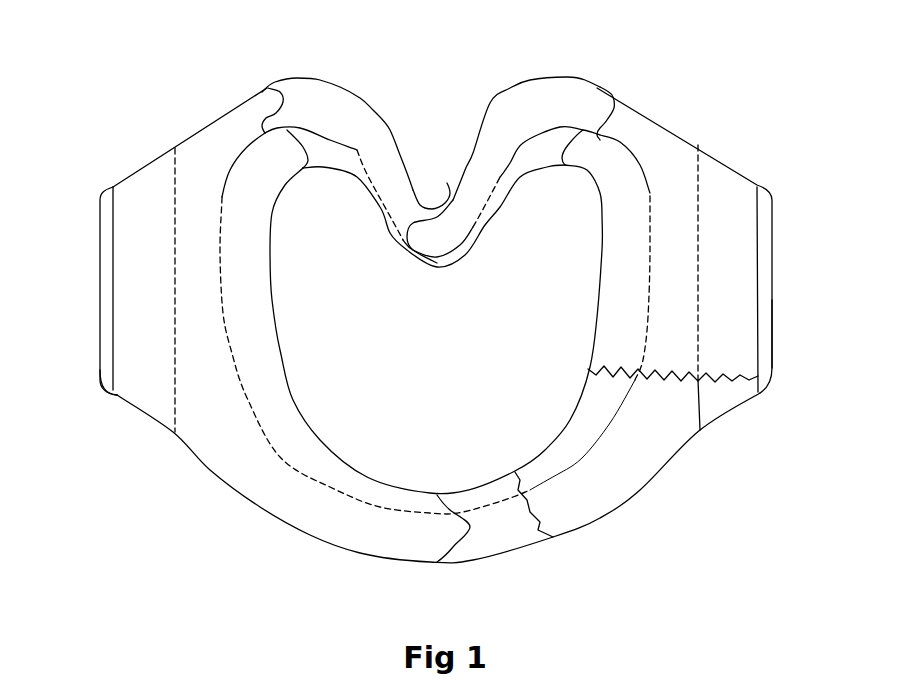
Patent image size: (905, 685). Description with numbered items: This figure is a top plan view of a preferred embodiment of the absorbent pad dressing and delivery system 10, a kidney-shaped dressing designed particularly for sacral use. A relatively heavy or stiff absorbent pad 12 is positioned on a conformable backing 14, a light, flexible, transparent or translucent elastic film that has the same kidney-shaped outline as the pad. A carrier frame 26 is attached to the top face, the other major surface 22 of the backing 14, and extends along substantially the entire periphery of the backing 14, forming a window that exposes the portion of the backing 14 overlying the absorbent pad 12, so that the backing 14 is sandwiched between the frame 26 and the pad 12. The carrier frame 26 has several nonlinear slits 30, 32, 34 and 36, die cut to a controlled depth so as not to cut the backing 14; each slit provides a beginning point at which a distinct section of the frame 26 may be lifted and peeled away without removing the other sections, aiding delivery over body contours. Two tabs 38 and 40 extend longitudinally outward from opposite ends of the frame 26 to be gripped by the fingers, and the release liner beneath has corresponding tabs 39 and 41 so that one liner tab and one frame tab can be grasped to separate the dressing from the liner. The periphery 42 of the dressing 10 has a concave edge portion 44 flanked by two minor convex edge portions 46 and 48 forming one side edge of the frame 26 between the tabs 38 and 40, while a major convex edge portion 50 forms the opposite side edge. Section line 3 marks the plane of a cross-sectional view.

The absorbent pad dressing and delivery system 10 is at (204, 550).
The absorbent pad 12 is at (365, 148).
The backing 14 is at (613, 473).
The other major surface 22 is at (424, 336).
The carrier frame 26 is at (201, 479).
The nonlinear slit 30 is at (253, 98).
The nonlinear slit 32 is at (593, 90).
The nonlinear slit 34 is at (453, 200).
The nonlinear slit 36 is at (450, 550).
The tab 38 is at (143, 392).
The tab 39 is at (103, 362).
The tab 40 is at (732, 195).
The tab 41 is at (773, 345).
The periphery 42 is at (202, 128).
The concave edge portion 44 is at (410, 185).
The minor convex edge portion 46 is at (308, 77).
The minor convex edge portion 48 is at (577, 77).
The major convex edge portion 50 is at (507, 540).
The section line 3- 3 is at (193, 295).